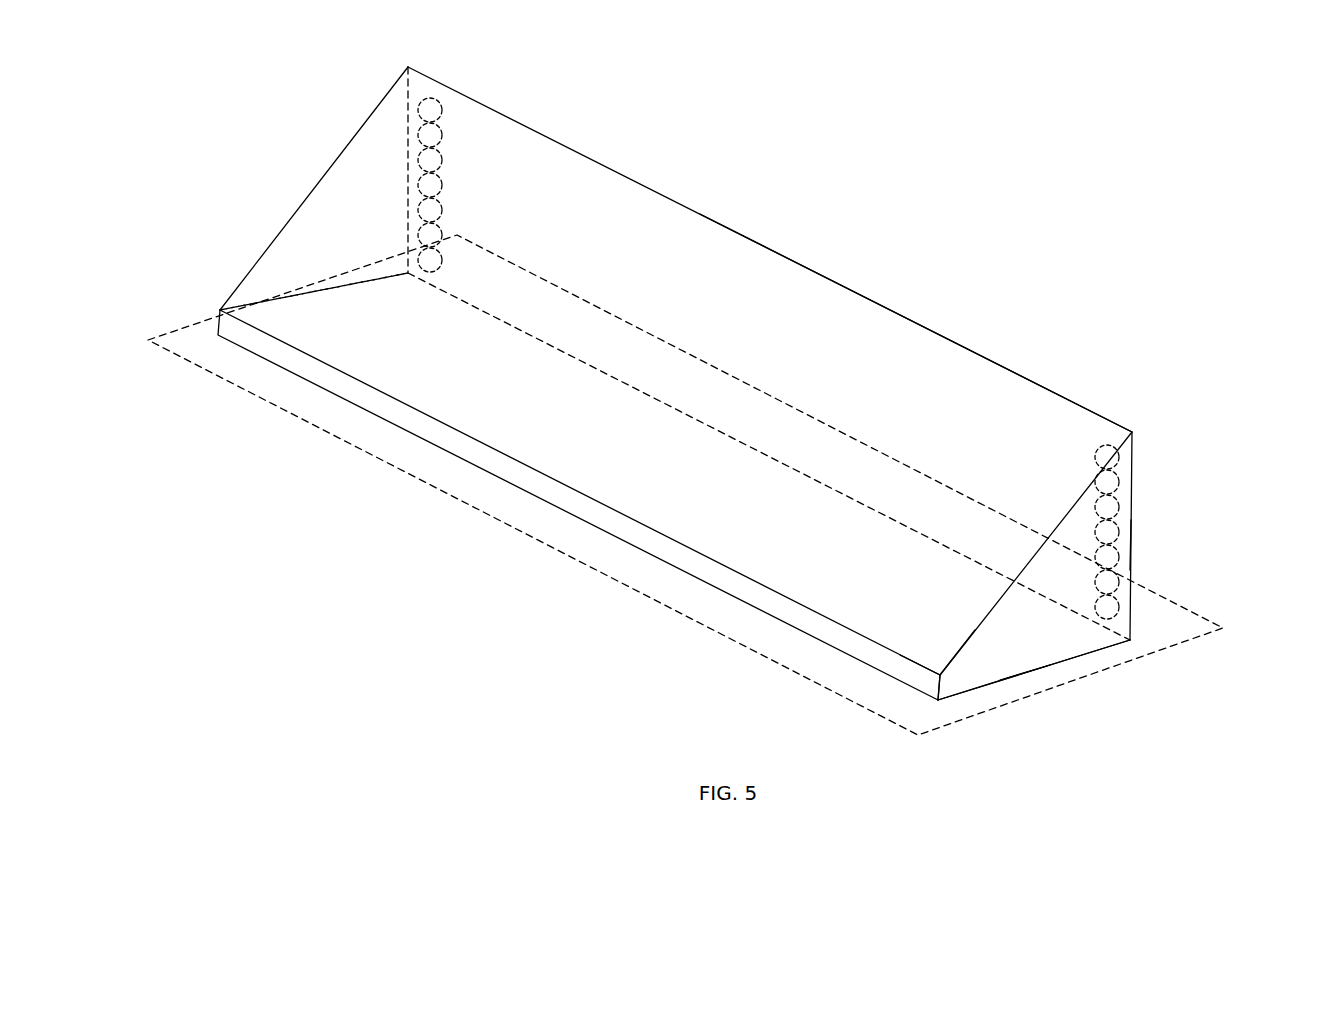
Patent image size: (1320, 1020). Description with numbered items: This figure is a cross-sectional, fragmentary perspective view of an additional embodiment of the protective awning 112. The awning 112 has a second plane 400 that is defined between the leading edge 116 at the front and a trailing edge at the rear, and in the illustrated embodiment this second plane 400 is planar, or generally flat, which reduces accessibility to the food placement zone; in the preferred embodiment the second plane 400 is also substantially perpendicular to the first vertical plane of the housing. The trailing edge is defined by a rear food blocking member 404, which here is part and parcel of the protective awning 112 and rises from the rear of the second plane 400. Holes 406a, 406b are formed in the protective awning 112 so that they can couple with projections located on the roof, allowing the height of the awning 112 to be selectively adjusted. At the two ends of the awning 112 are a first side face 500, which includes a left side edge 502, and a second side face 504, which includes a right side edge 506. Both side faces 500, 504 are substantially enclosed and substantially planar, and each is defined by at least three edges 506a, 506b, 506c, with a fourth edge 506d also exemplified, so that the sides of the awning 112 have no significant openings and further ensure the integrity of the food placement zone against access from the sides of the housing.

The protective awning 112 is at (699, 314).
The leading edge 116 is at (357, 405).
The second plane 400 is at (534, 532).
The rear food blocking member 404 is at (1040, 445).
The hole 406a is at (1116, 485).
The hole 406b is at (440, 138).
The first side face 500 is at (1028, 625).
The left side edge 502 is at (1085, 653).
The second side face 504 is at (333, 226).
The right side edge 506 is at (327, 299).
The edge 506a is at (1023, 673).
The edge 506b is at (958, 655).
The edge 506c is at (1131, 543).
The edge 506d is at (934, 675).